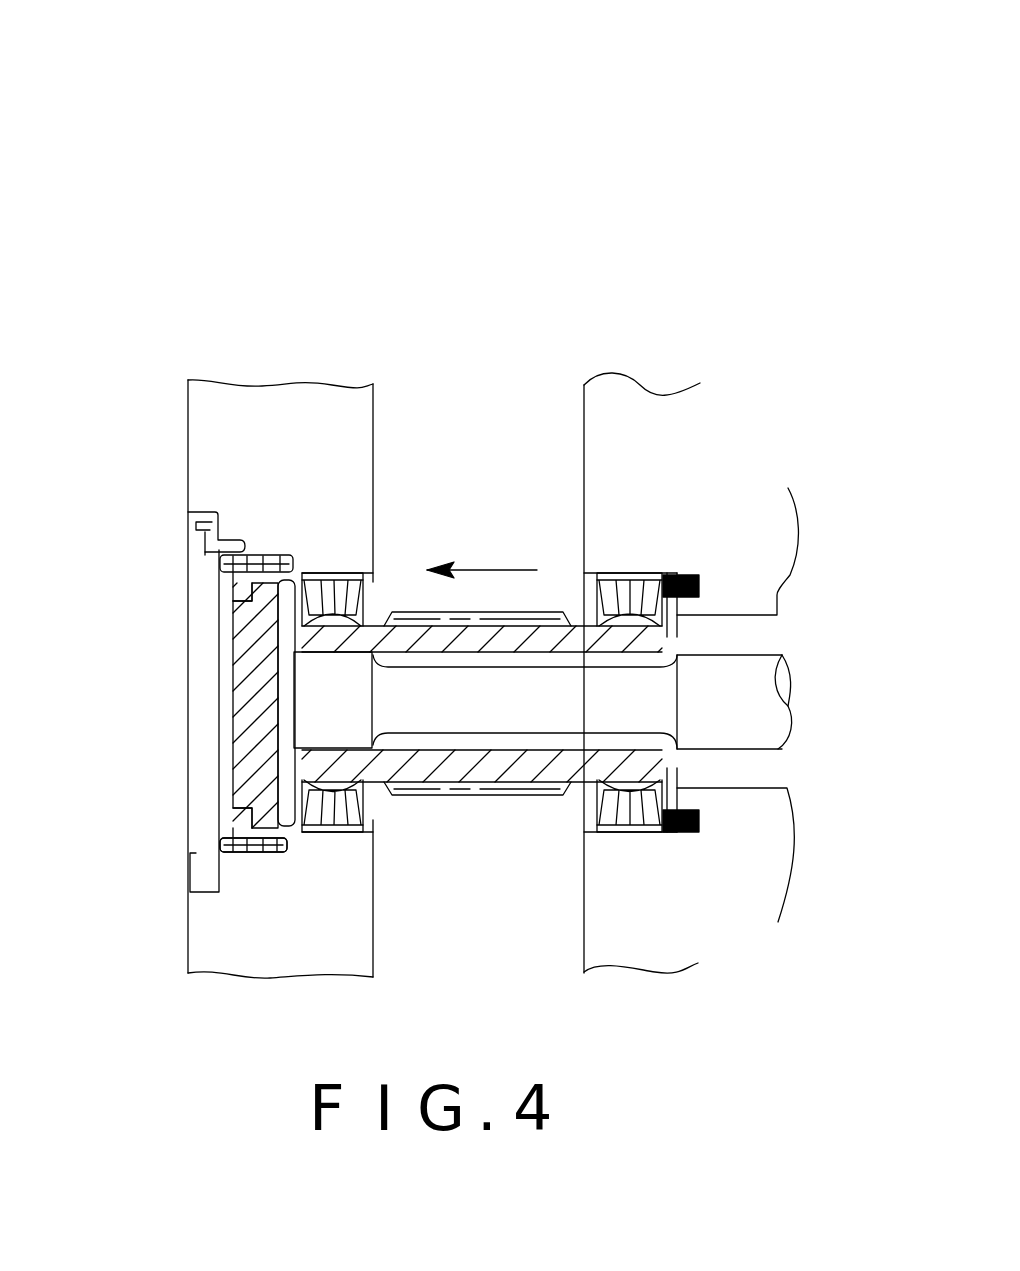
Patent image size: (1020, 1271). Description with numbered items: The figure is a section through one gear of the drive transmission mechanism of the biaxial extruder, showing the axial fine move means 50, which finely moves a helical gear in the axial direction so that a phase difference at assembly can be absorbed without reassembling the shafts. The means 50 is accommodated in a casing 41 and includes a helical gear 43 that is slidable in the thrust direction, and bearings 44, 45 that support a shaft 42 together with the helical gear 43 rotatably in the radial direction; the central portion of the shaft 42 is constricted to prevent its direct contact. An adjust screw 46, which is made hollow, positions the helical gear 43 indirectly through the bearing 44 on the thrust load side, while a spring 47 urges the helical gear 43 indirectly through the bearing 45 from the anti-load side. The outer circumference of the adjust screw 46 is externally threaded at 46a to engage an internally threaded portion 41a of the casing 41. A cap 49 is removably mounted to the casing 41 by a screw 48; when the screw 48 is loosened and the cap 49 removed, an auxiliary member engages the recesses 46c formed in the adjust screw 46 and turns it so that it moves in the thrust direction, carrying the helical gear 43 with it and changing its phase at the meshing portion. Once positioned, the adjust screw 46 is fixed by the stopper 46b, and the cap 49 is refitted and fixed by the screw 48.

The casing 41 is at (336, 387).
The internally threaded portion 41a is at (240, 852).
The shaft 42 is at (790, 706).
The helical gear 43 is at (480, 796).
The bearing 44 is at (333, 826).
The bearing 45 is at (620, 826).
The adjust screw 46 is at (232, 778).
The externally threaded portion 46a is at (233, 1000).
The stopper 46b is at (263, 555).
The recesses 46c is at (231, 591).
The spring 47 is at (700, 584).
The screw 48 is at (190, 536).
The cap 49 is at (187, 653).
The axial fine move means 50 is at (510, 227).